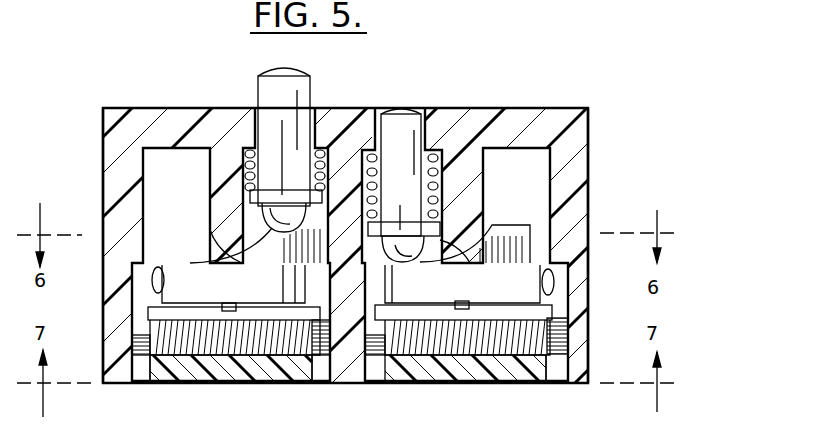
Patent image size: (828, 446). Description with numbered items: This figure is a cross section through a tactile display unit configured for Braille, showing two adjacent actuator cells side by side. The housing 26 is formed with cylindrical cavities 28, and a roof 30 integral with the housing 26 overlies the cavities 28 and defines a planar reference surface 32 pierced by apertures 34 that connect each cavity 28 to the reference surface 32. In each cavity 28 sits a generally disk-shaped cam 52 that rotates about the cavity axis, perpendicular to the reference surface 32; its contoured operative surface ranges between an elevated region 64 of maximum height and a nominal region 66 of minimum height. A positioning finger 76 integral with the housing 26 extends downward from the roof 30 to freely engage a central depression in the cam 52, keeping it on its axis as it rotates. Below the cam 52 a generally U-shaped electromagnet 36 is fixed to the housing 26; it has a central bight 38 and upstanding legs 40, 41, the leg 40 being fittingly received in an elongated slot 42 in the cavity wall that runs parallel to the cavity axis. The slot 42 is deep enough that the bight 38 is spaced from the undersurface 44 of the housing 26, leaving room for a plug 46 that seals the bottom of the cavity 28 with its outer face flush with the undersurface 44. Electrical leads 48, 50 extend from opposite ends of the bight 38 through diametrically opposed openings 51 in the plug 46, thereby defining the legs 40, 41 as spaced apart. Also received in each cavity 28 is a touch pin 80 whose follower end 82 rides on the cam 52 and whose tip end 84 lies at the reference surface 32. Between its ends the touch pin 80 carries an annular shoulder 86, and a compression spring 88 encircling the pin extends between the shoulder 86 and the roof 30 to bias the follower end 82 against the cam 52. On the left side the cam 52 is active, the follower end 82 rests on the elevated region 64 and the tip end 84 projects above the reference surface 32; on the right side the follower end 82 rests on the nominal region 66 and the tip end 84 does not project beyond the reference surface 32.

The housing 26 is at (583, 156).
The cavity 28 is at (135, 178).
The roof 30 is at (155, 118).
The reference surface 32 is at (565, 108).
The aperture 34 is at (430, 120).
The electromagnet 36 is at (232, 365).
The bight portion 38 is at (203, 345).
The leg 40 is at (145, 267).
The leg 41 is at (313, 291).
The elongated slot 42 is at (135, 320).
The undersurface 44 is at (580, 383).
The plug 46 is at (270, 370).
The electrical lead 48 is at (148, 385).
The electrical lead 50 is at (322, 385).
The opening 51 is at (555, 385).
The cam 52 is at (226, 291).
The elevated region 64 is at (515, 225).
The nominal region 66 is at (166, 262).
The positioning finger 76 is at (218, 170).
The touch pin 80 is at (298, 95).
The follower end 82 is at (412, 268).
The tip end 84 is at (280, 68).
The annular shoulder 86 is at (401, 175).
The compression spring 88 is at (442, 180).